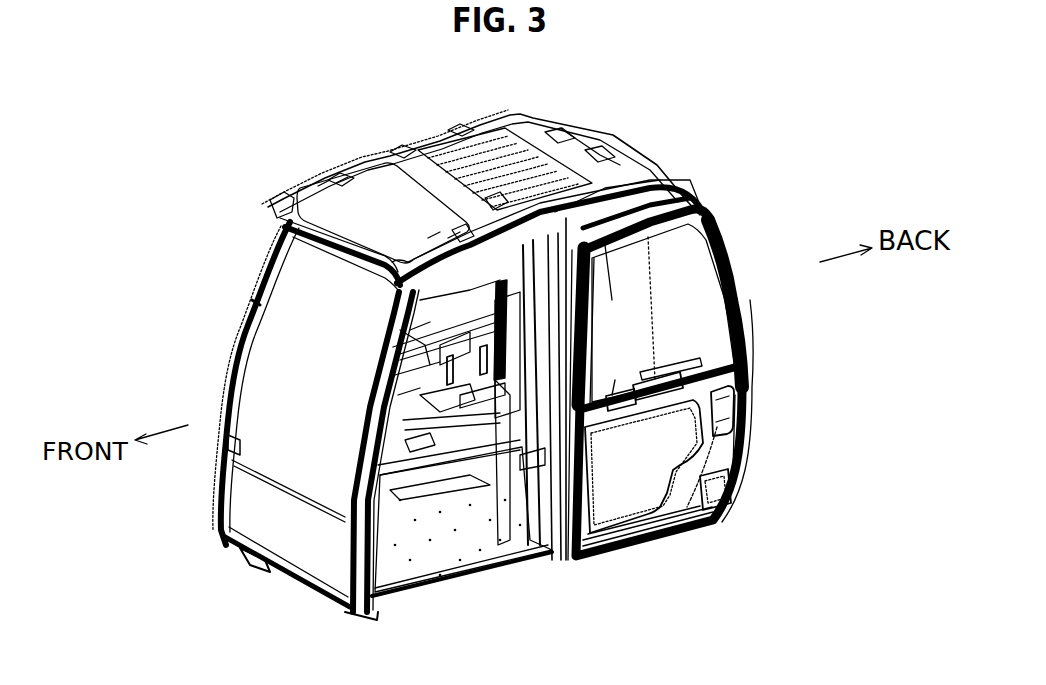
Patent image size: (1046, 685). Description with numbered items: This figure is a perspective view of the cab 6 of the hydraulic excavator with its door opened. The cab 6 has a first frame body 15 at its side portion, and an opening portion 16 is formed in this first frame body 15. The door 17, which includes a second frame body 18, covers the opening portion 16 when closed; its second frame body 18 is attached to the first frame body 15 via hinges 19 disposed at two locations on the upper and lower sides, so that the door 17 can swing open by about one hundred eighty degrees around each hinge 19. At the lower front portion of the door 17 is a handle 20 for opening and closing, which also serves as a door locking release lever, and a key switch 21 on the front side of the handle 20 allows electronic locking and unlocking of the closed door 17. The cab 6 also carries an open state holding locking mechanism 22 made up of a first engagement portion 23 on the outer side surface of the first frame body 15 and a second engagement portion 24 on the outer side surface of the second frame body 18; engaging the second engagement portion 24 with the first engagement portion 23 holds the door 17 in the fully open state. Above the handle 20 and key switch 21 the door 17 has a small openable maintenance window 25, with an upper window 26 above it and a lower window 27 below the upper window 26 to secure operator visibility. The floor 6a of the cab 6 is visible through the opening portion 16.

The cab 6 is at (706, 122).
The floor 6a is at (430, 553).
The first frame body 15 is at (550, 323).
The opening portion 16 is at (400, 310).
The door 17 is at (748, 253).
The second frame body 18 is at (727, 453).
The hinge 19 is at (542, 272).
The handle 20 is at (717, 487).
The key switch 21 is at (715, 489).
The open state holding locking mechanism 22 is at (838, 296).
The first engagement portion 23 is at (660, 372).
The second engagement portion 24 is at (672, 382).
The maintenance window 25 is at (727, 410).
The upper window 26 is at (673, 247).
The lower window 27 is at (623, 490).